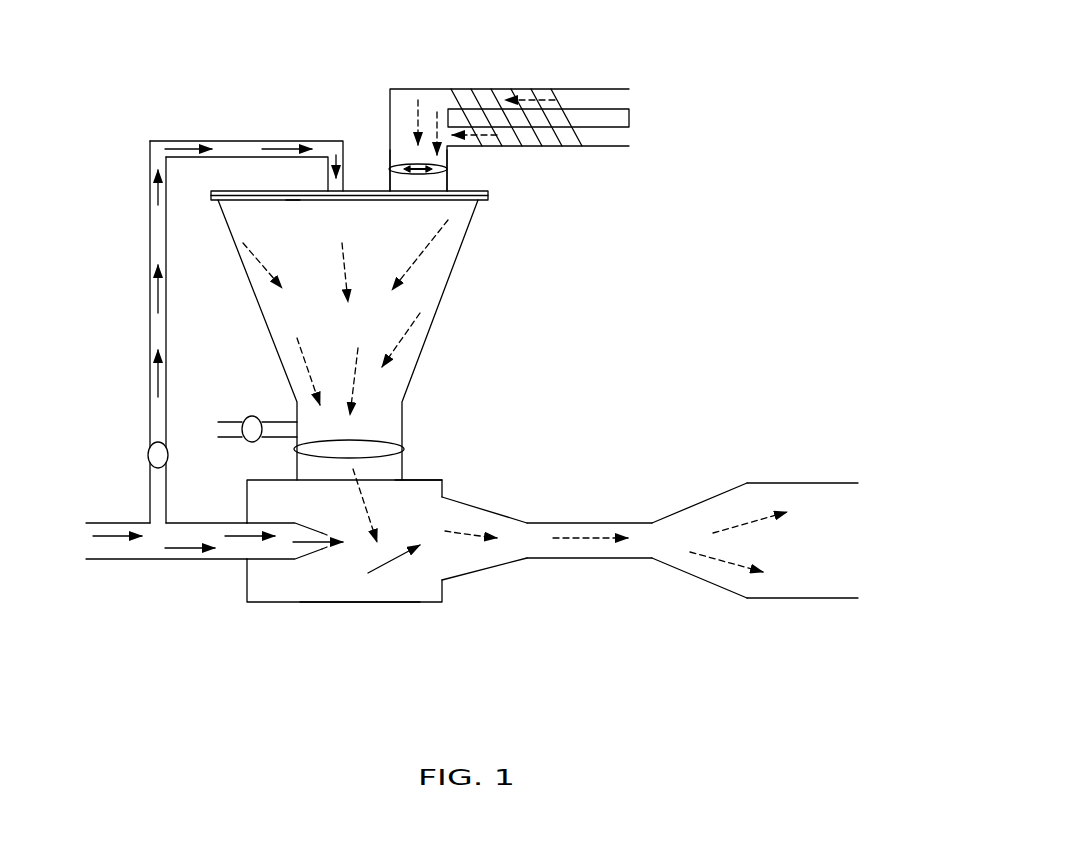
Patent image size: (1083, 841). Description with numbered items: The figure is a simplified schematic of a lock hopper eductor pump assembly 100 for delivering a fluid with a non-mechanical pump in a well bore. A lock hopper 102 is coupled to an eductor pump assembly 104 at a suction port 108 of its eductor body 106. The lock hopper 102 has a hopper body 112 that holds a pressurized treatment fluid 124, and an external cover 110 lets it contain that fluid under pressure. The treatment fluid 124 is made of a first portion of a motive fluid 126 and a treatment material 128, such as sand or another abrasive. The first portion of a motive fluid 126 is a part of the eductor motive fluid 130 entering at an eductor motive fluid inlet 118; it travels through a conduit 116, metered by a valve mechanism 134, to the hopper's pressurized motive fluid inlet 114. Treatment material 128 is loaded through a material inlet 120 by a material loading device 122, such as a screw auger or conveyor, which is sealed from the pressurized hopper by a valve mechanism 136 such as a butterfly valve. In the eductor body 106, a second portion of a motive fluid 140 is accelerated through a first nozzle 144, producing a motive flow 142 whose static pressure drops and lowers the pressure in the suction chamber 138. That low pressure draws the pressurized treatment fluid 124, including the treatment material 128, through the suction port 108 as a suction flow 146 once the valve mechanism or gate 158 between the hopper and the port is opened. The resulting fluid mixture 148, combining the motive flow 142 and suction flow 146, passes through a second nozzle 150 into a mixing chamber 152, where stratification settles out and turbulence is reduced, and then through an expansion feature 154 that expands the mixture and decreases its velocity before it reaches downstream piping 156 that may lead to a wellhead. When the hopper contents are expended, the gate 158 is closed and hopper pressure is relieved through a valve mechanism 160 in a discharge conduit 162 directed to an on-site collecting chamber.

The lock hopper eductor pump assembly 100 is at (746, 50).
The lock hopper 102 is at (357, 340).
The eductor pump assembly 104 is at (650, 555).
The eductor body 106 is at (334, 553).
The suction port 108 is at (408, 479).
The external cover 110 is at (292, 202).
The hopper body 112 is at (457, 258).
The pressurized motive fluid inlet 114 is at (327, 190).
The conduit 116 is at (192, 140).
The eductor motive fluid inlet 118 is at (177, 541).
The material inlet 120 is at (447, 188).
The material loading device 122 is at (580, 146).
The treatment fluid 124 is at (252, 260).
The first portion of a motive fluid 126 is at (160, 296).
The treatment material 128 is at (487, 124).
The eductor motive fluid 130 is at (113, 560).
The valve mechanism 134 is at (148, 452).
The valve mechanism 136 is at (398, 166).
The suction chamber 138 is at (358, 583).
The second portion of a motive fluid 140 is at (265, 561).
The motive flow 142 is at (328, 538).
The first nozzle 144 is at (320, 551).
The suction flow 146 is at (370, 505).
The fluid mixture 148 is at (470, 537).
The second nozzle 150 is at (493, 512).
The mixing chamber 152 is at (597, 523).
The expansion feature 154 is at (700, 502).
The downstream piping 156 is at (803, 483).
The valve mechanism or gate 158 is at (390, 448).
The valve mechanism 160 is at (250, 416).
The discharge conduit 162 is at (233, 430).